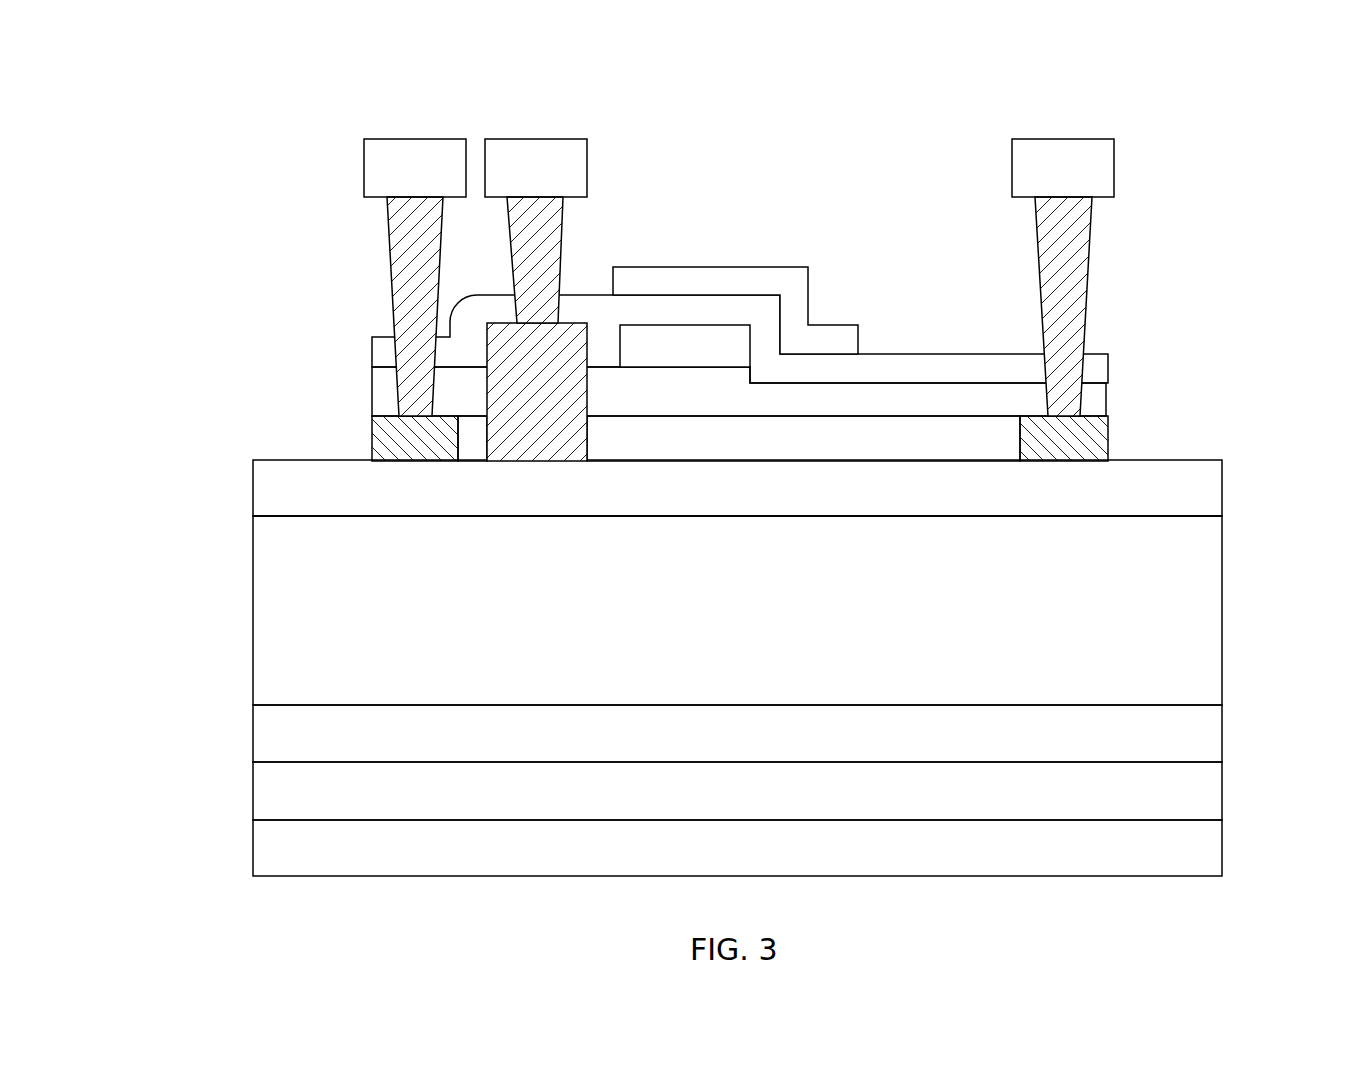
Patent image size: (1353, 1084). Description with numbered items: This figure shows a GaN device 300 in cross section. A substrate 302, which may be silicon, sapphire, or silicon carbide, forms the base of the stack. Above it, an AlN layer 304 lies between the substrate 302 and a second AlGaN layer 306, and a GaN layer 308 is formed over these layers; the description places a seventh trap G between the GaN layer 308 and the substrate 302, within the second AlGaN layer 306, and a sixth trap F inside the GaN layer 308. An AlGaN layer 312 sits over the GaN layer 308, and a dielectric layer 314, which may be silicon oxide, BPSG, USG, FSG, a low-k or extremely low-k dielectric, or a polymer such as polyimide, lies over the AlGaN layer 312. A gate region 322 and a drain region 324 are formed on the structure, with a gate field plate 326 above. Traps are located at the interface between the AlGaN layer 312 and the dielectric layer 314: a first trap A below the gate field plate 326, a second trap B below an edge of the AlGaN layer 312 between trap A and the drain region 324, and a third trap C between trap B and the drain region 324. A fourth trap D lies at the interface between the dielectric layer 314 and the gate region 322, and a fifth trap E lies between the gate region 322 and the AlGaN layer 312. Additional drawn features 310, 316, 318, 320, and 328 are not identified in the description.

The GaN device 300 is at (152, 84).
The substrate 302 is at (1205, 842).
The AlN layer 304 is at (1205, 791).
The second AlGaN layer 306 is at (1205, 733).
The GaN layer 308 is at (1205, 626).
The two-dimensional electron gas 310 is at (1205, 535).
The AlGaN layer 312 is at (1205, 486).
The dielectric layer 314 is at (958, 440).
The second dielectric layer 316 is at (917, 405).
The passivation layer 318 is at (887, 372).
The source pad 320 is at (378, 166).
The gate region 322 is at (572, 167).
The drain region 324 is at (1100, 167).
The gate field plate 326 is at (731, 344).
The second field plate 328 is at (829, 343).